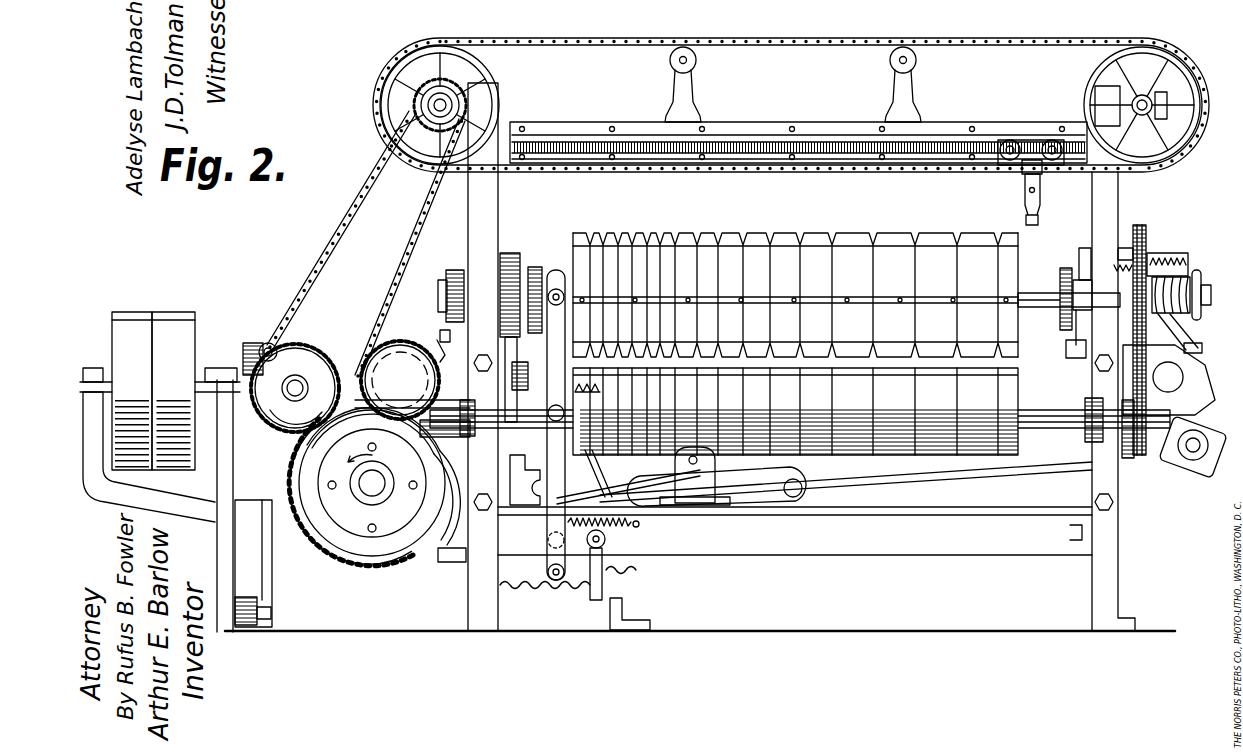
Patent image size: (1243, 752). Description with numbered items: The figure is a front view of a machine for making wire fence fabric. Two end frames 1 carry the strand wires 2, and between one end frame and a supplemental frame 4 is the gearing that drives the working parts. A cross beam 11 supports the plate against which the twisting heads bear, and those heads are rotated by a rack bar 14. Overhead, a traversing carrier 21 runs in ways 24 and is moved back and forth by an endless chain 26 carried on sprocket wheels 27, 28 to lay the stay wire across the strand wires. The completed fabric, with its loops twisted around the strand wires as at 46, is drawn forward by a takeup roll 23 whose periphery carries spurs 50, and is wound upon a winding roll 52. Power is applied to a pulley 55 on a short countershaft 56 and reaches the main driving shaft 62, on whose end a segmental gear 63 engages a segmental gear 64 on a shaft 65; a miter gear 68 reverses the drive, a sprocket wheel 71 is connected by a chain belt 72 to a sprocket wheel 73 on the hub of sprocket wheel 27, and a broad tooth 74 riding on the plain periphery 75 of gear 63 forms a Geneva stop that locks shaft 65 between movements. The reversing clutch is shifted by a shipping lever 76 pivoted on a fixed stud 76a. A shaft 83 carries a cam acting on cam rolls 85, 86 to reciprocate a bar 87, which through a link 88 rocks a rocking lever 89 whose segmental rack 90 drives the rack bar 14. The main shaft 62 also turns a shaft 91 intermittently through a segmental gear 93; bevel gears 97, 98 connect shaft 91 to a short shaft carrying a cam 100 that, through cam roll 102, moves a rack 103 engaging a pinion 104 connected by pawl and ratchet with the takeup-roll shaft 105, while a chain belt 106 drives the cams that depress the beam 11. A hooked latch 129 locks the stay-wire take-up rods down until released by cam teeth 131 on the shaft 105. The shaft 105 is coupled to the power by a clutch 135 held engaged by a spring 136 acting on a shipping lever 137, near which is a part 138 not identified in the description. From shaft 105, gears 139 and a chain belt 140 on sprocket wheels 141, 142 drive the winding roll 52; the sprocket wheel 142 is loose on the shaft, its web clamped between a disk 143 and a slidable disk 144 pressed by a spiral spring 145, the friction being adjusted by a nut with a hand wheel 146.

The end frames 1 is at (498, 225).
The strand wires 2 is at (828, 284).
The supplemental frame 4 is at (225, 535).
The cross beam 11 is at (1080, 256).
The rack bar 14 is at (1160, 256).
The traversing carrier 21 is at (1024, 192).
The takeup roll 23 is at (1020, 285).
The ways 24 is at (955, 143).
The endless chain 26 is at (668, 188).
The sprocket wheel 27 is at (500, 95).
The sprocket wheel 28 is at (1090, 85).
The twisted loop 46 is at (830, 338).
The spurs 50 is at (753, 238).
The winding roll 52 is at (1024, 412).
The pulley 55 is at (176, 310).
The countershaft 56 is at (205, 368).
The main driving shaft 62 is at (378, 494).
The segmental gear 63 is at (350, 562).
The segmental gear 64 is at (282, 425).
The shaft 65 is at (288, 394).
The miter gear 68 is at (248, 348).
The sprocket wheel 71 is at (269, 342).
The chain belt 72 is at (308, 268).
The sprocket wheel 73 is at (442, 88).
The broad tooth 74 is at (300, 437).
The plain periphery 75 is at (418, 555).
The shipping lever 76 is at (272, 568).
The fixed stud 76a is at (272, 607).
The shaft 83 is at (548, 518).
The cam roll 85 is at (510, 478).
The cam roll 86 is at (700, 456).
The bar 87 is at (755, 506).
The link 88 is at (988, 478).
The rocking lever 89 is at (1185, 475).
The segmental rack 90 is at (1188, 275).
The shaft 91 is at (388, 441).
The segmental gear 93 is at (412, 418).
The bevel gear 97 is at (402, 345).
The bevel gear 98 is at (440, 344).
The cam 100 is at (510, 398).
The cam roll 102 is at (520, 364).
The rack 103 is at (470, 266).
The pinion 104 is at (446, 276).
The shaft 105 is at (1018, 297).
The chain belt 106 is at (582, 381).
The hooked latch 129 is at (1086, 340).
The cam teeth 131 is at (1062, 306).
The clutch 135 is at (548, 250).
The spring 136 is at (626, 526).
The shipping lever 137 is at (603, 489).
The pin 138 is at (625, 586).
The gears 139 is at (1090, 444).
The chain belt 140 is at (1200, 386).
The sprocket wheel 141 is at (1130, 460).
The sprocket wheel 142 is at (1156, 226).
The disk 143 is at (1150, 218).
The slidable disk 144 is at (1126, 278).
The spiral spring 145 is at (1204, 286).
The hand wheel 146 is at (1202, 335).